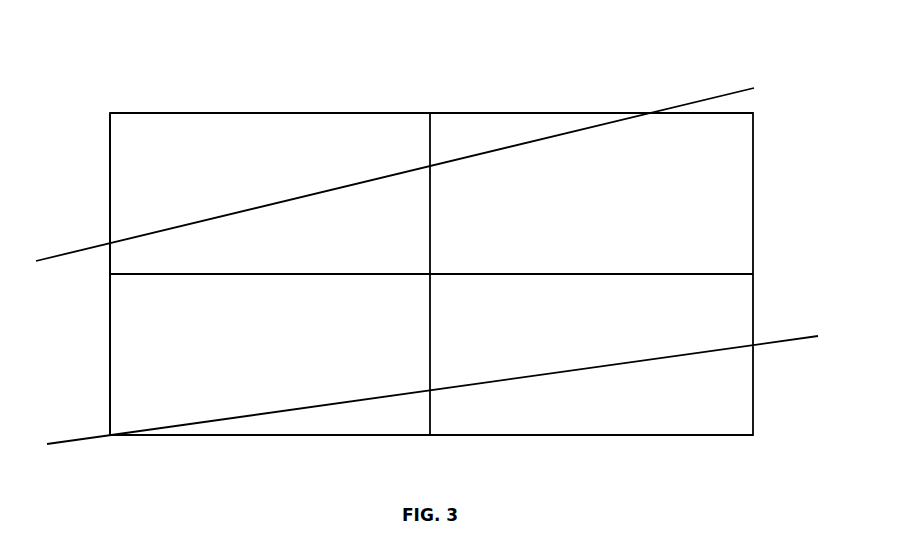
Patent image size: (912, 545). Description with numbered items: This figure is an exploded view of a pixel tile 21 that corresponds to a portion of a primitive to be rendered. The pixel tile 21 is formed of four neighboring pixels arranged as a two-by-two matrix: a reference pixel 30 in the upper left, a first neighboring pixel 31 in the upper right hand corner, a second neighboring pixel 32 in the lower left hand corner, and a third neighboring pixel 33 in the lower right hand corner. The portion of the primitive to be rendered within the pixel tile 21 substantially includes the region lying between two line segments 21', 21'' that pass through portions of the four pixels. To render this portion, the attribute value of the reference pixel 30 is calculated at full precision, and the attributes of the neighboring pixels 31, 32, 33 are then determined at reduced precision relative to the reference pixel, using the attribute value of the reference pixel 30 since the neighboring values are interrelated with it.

The pixel tile 21 is at (431, 236).
The reference pixel P0 30 is at (138, 113).
The pixel P1 31 is at (467, 113).
The pixel P2 32 is at (110, 339).
The pixel P3 33 is at (668, 435).
The line segment 21' is at (429, 162).
The line segment 21'' is at (443, 390).